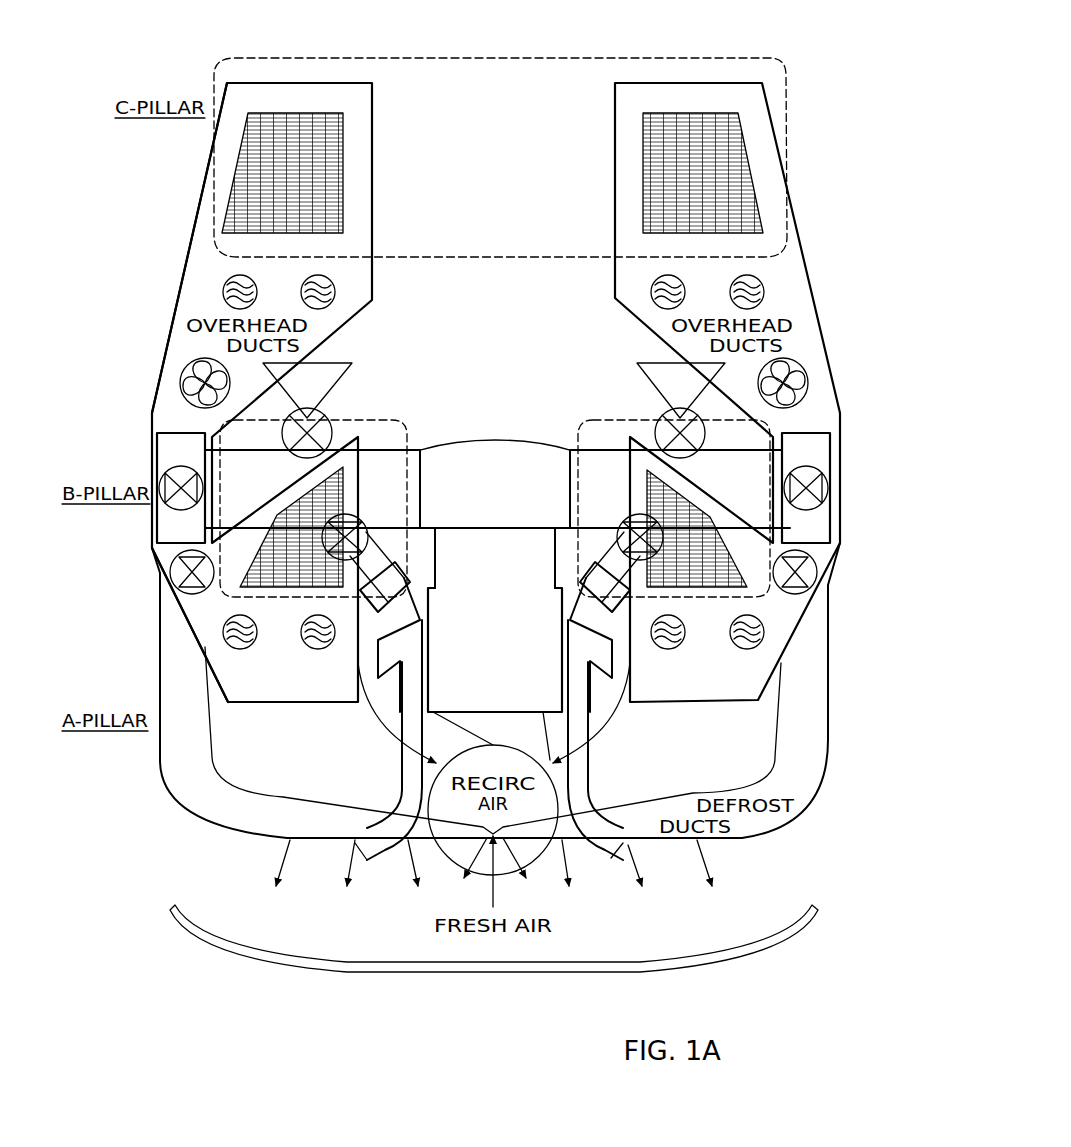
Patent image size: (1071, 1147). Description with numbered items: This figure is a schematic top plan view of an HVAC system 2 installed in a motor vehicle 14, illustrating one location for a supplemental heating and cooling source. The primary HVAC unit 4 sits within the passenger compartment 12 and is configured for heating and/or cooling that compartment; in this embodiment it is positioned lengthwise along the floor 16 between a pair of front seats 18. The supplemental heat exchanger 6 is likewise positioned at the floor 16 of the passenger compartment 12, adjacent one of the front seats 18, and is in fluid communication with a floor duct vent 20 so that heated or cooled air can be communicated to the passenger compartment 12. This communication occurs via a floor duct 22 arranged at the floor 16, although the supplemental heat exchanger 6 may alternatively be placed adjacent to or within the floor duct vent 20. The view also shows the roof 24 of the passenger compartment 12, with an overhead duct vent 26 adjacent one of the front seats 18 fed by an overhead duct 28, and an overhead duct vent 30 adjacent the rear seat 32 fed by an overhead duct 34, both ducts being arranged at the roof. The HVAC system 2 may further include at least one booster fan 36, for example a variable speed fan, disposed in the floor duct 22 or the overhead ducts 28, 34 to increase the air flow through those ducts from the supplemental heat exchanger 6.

The HVAC system 2 is at (530, 460).
The motor vehicle 14 is at (831, 295).
The primary HVAC unit 4 is at (485, 608).
The supplemental heat exchanger 6 is at (380, 592).
The passenger compartment 12 is at (469, 378).
The floor 16 is at (319, 786).
The front seats 18 is at (267, 590).
The floor duct vent 20 is at (376, 658).
The floor duct 22 is at (372, 862).
The roof 24 is at (252, 691).
The overhead duct vent 26 is at (208, 657).
The overhead duct 28 is at (227, 648).
The overhead duct vent 30 is at (302, 283).
The rear seat 32 is at (408, 258).
The overhead duct 34 is at (165, 347).
The booster fan 36 is at (179, 383).